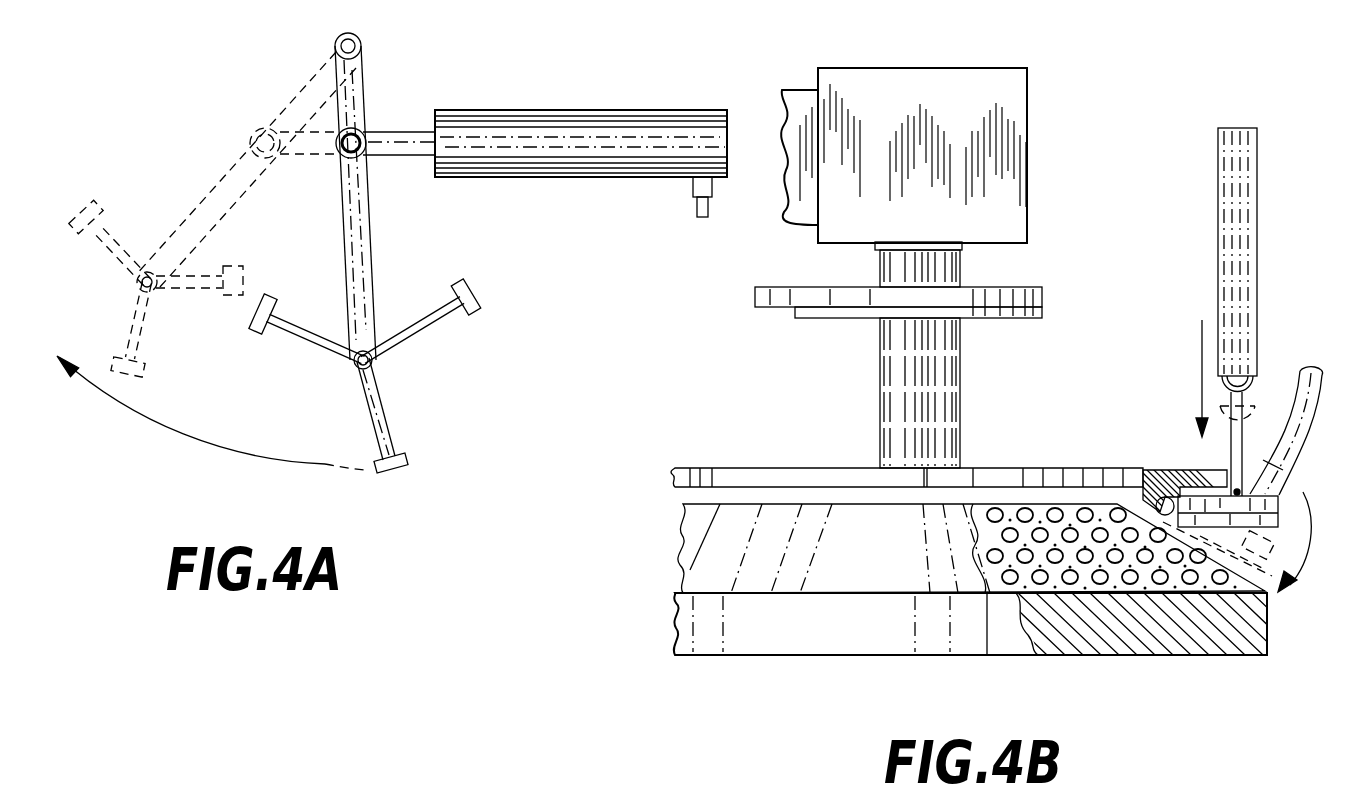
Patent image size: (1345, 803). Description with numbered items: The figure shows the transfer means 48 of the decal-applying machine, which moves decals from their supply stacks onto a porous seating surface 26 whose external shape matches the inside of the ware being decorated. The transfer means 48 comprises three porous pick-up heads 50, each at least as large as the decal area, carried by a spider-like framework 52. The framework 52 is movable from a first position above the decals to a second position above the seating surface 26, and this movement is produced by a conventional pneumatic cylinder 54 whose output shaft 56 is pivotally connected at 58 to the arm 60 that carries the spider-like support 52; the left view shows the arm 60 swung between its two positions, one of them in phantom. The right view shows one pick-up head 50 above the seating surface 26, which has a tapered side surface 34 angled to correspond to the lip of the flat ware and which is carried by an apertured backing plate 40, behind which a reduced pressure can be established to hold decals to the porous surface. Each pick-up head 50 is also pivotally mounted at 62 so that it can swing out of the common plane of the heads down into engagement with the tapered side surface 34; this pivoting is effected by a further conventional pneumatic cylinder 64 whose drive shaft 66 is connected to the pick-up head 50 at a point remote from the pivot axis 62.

In FIG. 4B, the porous seating surface 26 is at (683, 520).
In FIG. 4B, the tapered side surface 34 is at (1263, 592).
In FIG. 4B, the apertured backing plate 40 is at (745, 632).
In FIG. 4A, the transfer means 48 is at (500, 235).
In FIG. 4B, the transfer means 48 is at (760, 434).
In FIG. 4A, the porous pick-up head 50 is at (80, 212).
In FIG. 4B, the porous pick-up head 50 is at (1280, 506).
In FIG. 4A, the spider-like framework 52 is at (323, 337).
In FIG. 4B, the spider-like framework 52 is at (1045, 468).
In FIG. 4A, the pneumatic cylinder 54 is at (625, 178).
In FIG. 4A, the output shaft 56 is at (418, 131).
In FIG. 4A, the pivotal connection 58 is at (338, 140).
In FIG. 4A, the arm 60 is at (370, 222).
In FIG. 4B, the pivot axis 62 is at (1140, 470).
In FIG. 4B, the pneumatic cylinder 64 is at (1248, 283).
In FIG. 4B, the drive shaft 66 is at (1240, 455).